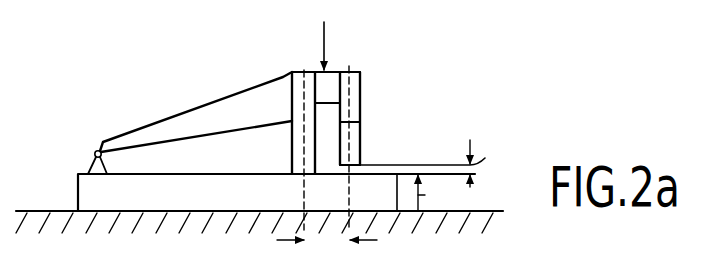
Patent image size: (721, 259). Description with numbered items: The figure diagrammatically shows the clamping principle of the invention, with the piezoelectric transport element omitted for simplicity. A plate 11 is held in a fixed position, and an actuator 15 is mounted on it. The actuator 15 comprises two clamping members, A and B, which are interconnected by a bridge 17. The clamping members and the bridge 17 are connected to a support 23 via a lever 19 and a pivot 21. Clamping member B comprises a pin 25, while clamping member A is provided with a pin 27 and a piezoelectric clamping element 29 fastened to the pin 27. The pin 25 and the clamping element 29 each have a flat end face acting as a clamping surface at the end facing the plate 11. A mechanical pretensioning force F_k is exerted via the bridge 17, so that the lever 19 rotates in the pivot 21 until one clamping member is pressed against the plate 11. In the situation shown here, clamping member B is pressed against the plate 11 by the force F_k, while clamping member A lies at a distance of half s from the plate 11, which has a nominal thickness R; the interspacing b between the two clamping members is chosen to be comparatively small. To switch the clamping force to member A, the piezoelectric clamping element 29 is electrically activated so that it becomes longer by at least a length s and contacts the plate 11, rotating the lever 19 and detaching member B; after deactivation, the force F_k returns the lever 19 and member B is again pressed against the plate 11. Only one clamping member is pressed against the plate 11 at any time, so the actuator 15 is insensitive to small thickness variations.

The actuator 15 is at (100, 86).
The plate 11 is at (88, 198).
The lever 19 is at (185, 122).
The pivot 21 is at (95, 151).
The support 23 is at (93, 170).
The pin 25 is at (298, 88).
The bridge 17 is at (362, 107).
The pin 27 is at (357, 92).
The piezoelectric clamping element 29 is at (360, 142).